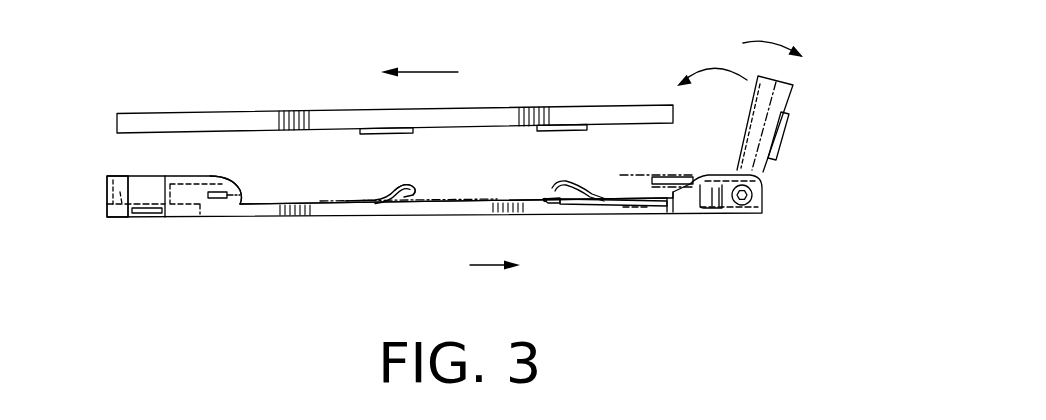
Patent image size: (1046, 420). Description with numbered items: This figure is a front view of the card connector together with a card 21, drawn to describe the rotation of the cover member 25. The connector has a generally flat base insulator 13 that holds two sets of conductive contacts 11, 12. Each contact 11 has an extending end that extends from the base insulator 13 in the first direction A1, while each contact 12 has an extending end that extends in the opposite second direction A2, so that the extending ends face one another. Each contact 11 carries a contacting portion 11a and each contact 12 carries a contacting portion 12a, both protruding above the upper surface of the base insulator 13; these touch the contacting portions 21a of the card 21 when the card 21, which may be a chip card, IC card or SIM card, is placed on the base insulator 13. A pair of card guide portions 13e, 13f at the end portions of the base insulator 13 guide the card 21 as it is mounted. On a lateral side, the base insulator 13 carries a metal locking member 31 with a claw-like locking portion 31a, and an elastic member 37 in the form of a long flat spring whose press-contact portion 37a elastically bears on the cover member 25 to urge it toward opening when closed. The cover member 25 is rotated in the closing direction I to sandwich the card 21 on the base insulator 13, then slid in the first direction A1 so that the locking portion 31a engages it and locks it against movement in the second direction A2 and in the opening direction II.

The conductive contacts 11 is at (622, 202).
The contacting portion 11a is at (570, 184).
The conductive contacts 12 is at (362, 199).
The contacting portion 12a is at (410, 186).
The base insulator 13 is at (425, 217).
The card guide portion 13e is at (677, 210).
The card guide portion 13f is at (124, 176).
The card 21 is at (617, 106).
The contacting portions 21a is at (390, 131).
The cover member 25 is at (665, 172).
The locking members 31 is at (235, 187).
The locking portion 31a is at (228, 208).
The elastic member 37 is at (612, 211).
The press-contact portion 37a is at (556, 206).
The first direction A1 is at (426, 71).
The second direction A2 is at (484, 267).
The closing direction I is at (712, 67).
The opening direction II is at (767, 42).